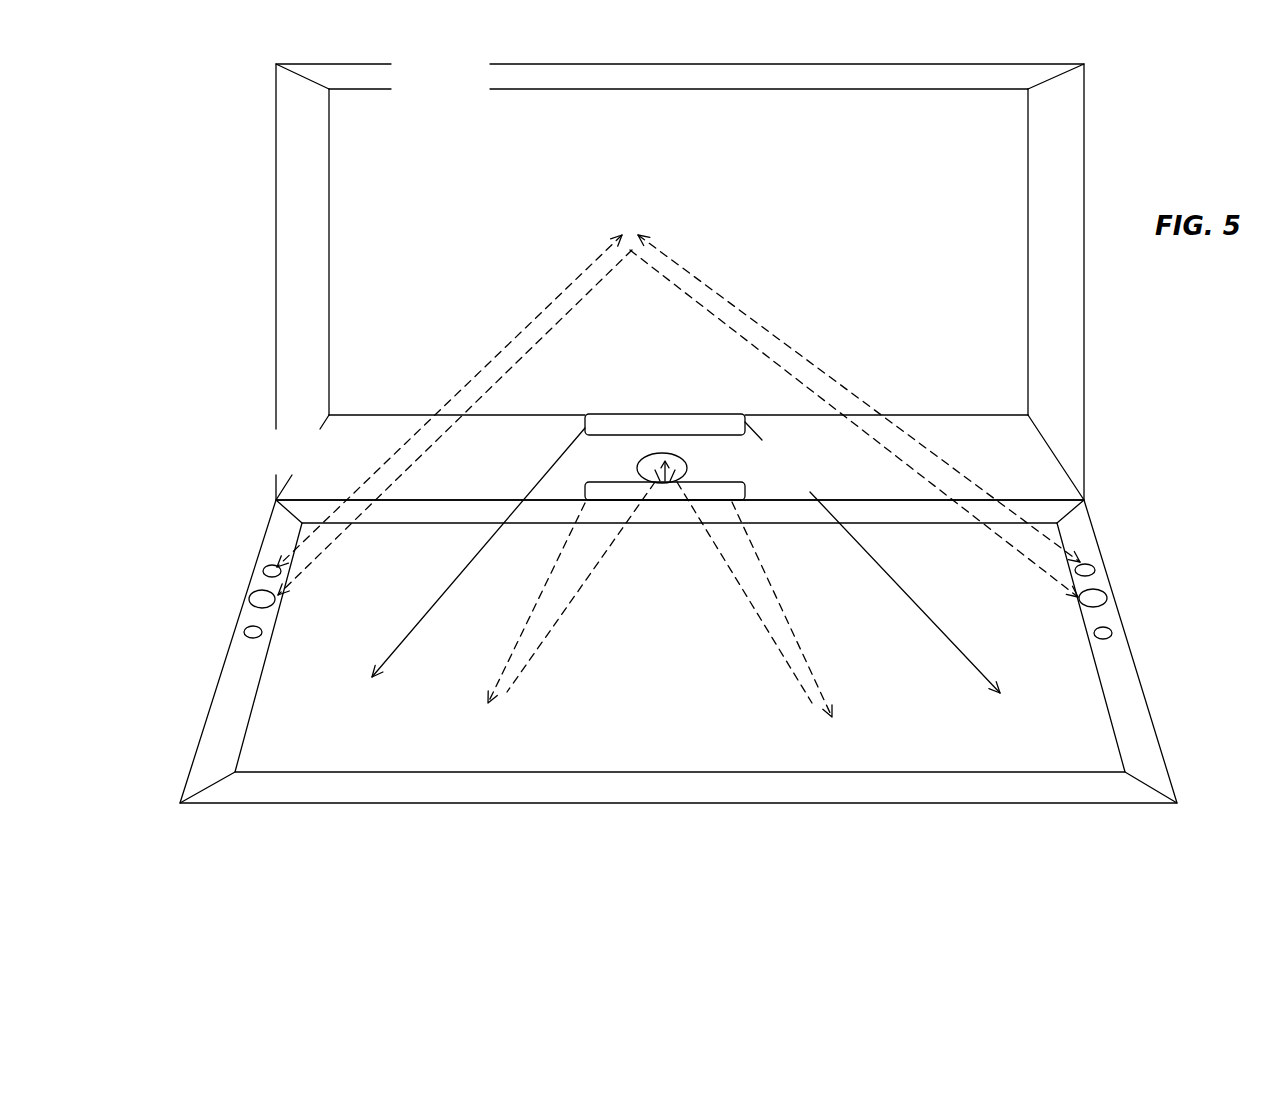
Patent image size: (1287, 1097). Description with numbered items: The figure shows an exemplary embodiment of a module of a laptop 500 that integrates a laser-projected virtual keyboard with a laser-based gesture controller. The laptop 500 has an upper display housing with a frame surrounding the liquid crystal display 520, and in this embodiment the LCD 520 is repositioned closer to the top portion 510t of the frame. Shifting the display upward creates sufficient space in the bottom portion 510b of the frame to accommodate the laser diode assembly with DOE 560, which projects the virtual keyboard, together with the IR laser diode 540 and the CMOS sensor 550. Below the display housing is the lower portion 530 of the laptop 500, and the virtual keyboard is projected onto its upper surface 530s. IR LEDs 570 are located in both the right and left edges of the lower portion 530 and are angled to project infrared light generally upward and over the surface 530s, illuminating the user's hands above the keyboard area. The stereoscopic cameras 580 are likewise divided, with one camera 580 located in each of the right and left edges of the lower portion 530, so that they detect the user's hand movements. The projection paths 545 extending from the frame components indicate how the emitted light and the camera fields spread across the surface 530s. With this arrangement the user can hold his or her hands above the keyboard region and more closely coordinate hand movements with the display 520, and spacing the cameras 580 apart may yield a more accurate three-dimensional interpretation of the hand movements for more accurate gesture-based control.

The laptop 500 is at (1092, 158).
The top portion of the frame 510t is at (472, 92).
The bottom portion of the frame 510b is at (366, 468).
The liquid crystal display 520 is at (906, 183).
The lower portion 530 is at (653, 788).
The upper surface of the lower portion 530s is at (689, 735).
The IR laser diode 540 is at (578, 482).
The field of view 545 is at (449, 711).
The CMOS sensor 550 is at (708, 467).
The laser diode assembly with DOE 560 is at (682, 401).
The IR LEDs 570 is at (336, 672).
The stereoscopic cameras 580 is at (351, 625).